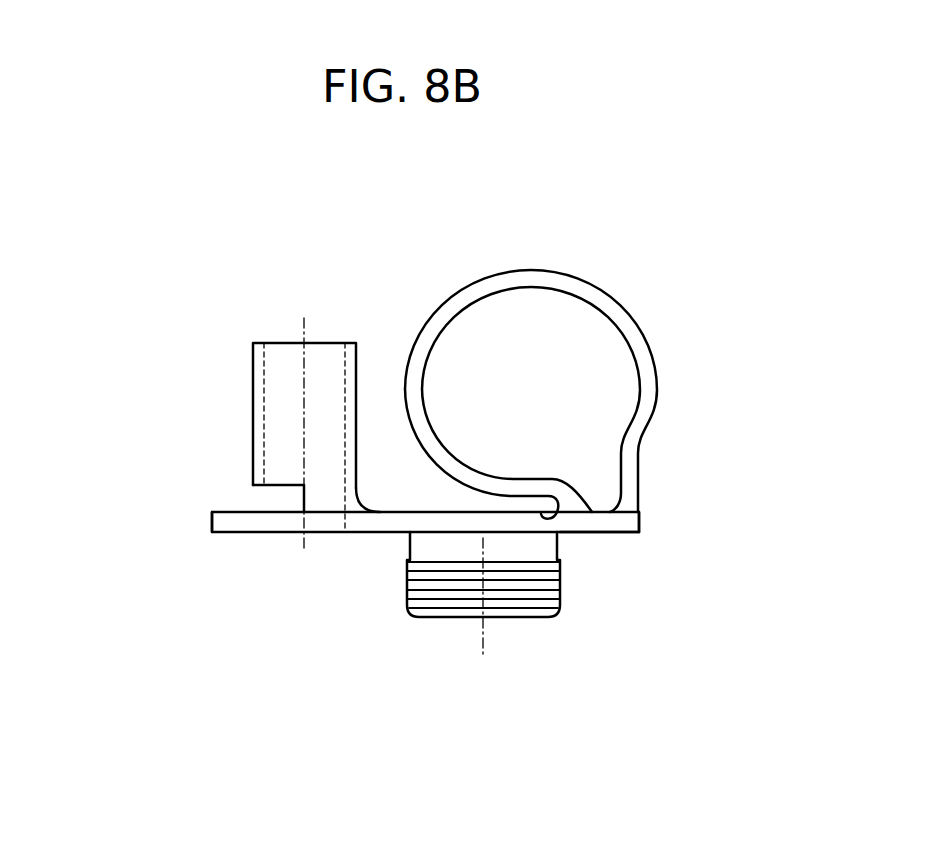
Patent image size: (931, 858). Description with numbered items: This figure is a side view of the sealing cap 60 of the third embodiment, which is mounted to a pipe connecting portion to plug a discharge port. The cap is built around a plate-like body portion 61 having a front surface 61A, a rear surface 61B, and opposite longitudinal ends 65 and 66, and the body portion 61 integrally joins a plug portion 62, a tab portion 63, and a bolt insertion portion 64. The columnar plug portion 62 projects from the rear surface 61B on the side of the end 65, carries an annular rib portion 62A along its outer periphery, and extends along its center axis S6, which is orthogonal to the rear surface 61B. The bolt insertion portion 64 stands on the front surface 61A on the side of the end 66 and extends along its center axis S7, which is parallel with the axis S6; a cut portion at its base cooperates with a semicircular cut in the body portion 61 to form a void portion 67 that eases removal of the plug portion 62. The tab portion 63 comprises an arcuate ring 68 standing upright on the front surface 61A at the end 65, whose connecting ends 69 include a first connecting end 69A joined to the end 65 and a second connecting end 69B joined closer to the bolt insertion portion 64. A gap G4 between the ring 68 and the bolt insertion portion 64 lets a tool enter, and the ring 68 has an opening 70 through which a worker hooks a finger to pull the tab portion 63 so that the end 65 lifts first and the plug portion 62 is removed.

The sealing cap 60 is at (643, 293).
The plate-like body portion 61 is at (250, 534).
The front surface 61A is at (452, 510).
The rear surface 61B is at (592, 533).
The plug portion 62 is at (452, 618).
The annular rib portion 62A is at (408, 580).
The tab portion 63 is at (562, 273).
The bolt insertion portion 64 is at (253, 388).
The end 65 is at (642, 517).
The end 66 is at (212, 522).
The void portion 67 is at (273, 497).
The ring 68 is at (475, 295).
The connecting ends 69 is at (613, 421).
The first connecting end 69A is at (611, 515).
The second connecting end 69B is at (541, 512).
The opening 70 is at (540, 361).
The gap G4 is at (385, 392).
The center axis S6 is at (483, 609).
The center axis S7 is at (305, 420).